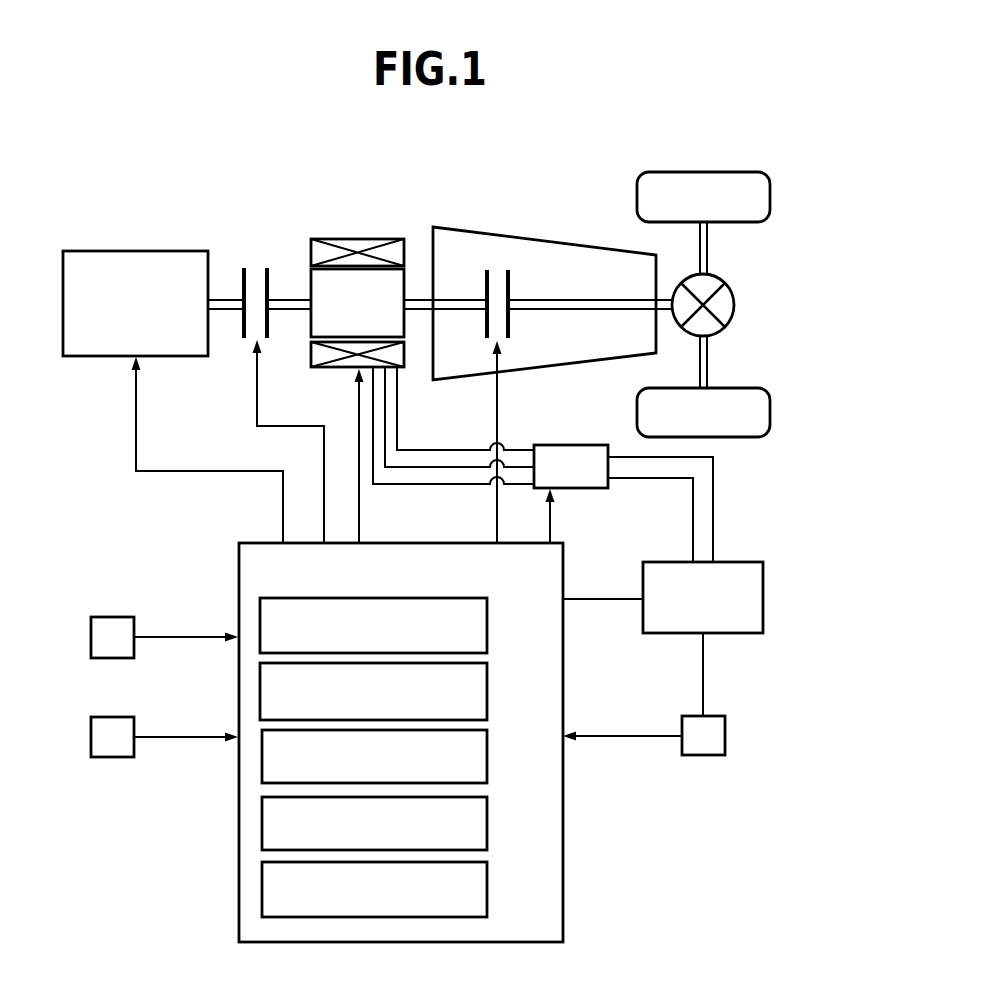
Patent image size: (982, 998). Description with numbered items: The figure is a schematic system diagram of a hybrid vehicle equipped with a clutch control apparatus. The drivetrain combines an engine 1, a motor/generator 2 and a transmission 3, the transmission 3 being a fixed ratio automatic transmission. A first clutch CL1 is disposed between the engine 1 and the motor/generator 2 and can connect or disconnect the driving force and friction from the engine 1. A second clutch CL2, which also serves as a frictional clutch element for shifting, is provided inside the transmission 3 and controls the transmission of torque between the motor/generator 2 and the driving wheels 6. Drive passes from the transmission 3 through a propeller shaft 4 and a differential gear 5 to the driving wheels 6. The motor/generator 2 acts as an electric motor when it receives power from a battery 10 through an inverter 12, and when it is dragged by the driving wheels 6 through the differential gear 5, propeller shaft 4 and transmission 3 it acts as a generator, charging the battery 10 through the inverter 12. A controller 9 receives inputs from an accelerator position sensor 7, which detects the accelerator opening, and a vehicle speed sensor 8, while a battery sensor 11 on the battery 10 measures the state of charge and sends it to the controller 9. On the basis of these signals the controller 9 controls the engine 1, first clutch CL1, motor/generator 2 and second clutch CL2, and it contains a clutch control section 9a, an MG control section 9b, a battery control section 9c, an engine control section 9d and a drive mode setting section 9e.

The engine 1 is at (133, 251).
The first clutch CL1 is at (257, 267).
The motor/generator 2 is at (355, 239).
The second clutch CL2 is at (498, 268).
The transmission 3 is at (568, 243).
The propeller shaft 4 is at (537, 299).
The differential gear 5 is at (734, 303).
The driving wheel 6 is at (770, 183).
The accelerator position sensor 7 is at (115, 717).
The vehicle speed sensor 8 is at (115, 617).
The controller 9 is at (563, 862).
The clutch control section 9a is at (487, 627).
The MG control section 9b is at (487, 692).
The battery control section 9c is at (487, 756).
The engine control section 9d is at (487, 824).
The drive mode setting section 9e is at (487, 891).
The battery 10 is at (763, 597).
The battery sensor 11 is at (725, 732).
The inverter 12 is at (573, 445).